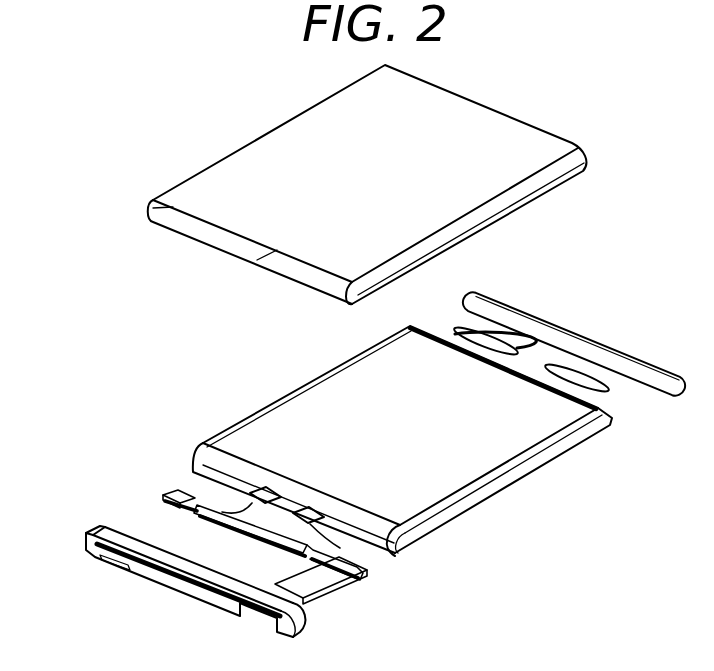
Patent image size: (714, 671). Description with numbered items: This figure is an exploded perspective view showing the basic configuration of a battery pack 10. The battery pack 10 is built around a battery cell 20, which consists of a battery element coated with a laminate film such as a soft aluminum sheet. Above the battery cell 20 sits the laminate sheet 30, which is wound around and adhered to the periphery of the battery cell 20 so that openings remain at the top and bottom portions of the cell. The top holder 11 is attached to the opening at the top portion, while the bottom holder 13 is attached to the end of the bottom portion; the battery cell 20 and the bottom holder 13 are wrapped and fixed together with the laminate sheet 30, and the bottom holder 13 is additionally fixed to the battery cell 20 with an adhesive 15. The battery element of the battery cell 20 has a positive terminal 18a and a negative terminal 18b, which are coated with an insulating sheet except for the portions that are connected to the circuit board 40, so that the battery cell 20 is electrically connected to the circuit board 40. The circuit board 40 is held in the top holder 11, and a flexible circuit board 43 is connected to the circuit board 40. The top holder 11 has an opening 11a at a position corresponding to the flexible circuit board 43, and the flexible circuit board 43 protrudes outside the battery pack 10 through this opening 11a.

The battery pack 10 is at (582, 619).
The laminate sheet 30 is at (272, 138).
The battery cell 20 is at (428, 419).
The bottom holder 13 is at (600, 342).
The adhesive 15 is at (467, 328).
The circuit board 40 is at (258, 547).
The positive terminal 18a is at (248, 500).
The negative terminal 18b is at (312, 528).
The flexible circuit board 43 is at (320, 578).
The top holder 11 is at (174, 596).
The opening 11a is at (258, 616).